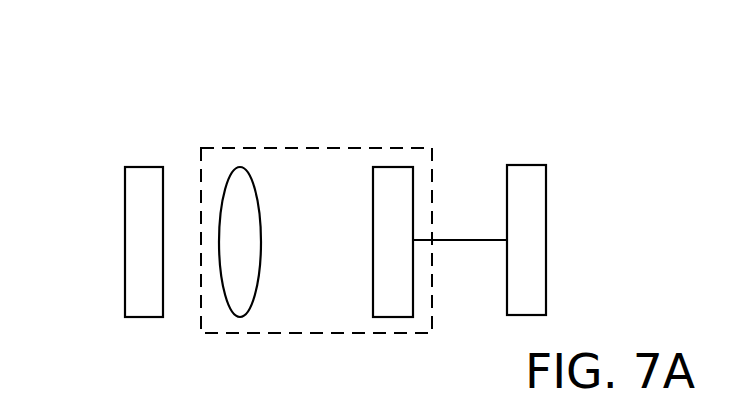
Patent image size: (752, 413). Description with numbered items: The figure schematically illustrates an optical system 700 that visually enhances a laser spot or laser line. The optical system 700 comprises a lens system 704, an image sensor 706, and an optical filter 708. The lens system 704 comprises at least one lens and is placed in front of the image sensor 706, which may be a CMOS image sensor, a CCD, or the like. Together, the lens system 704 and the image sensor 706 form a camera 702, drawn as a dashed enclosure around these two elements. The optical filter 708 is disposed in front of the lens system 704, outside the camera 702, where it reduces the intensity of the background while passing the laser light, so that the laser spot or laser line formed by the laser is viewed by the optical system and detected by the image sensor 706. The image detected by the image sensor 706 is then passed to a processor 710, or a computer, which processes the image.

The optical system 700 is at (107, 52).
The camera 702 is at (432, 204).
The lens system 704 is at (240, 167).
The image sensor 706 is at (393, 167).
The optical filter 708 is at (149, 167).
The processor 710 is at (546, 240).